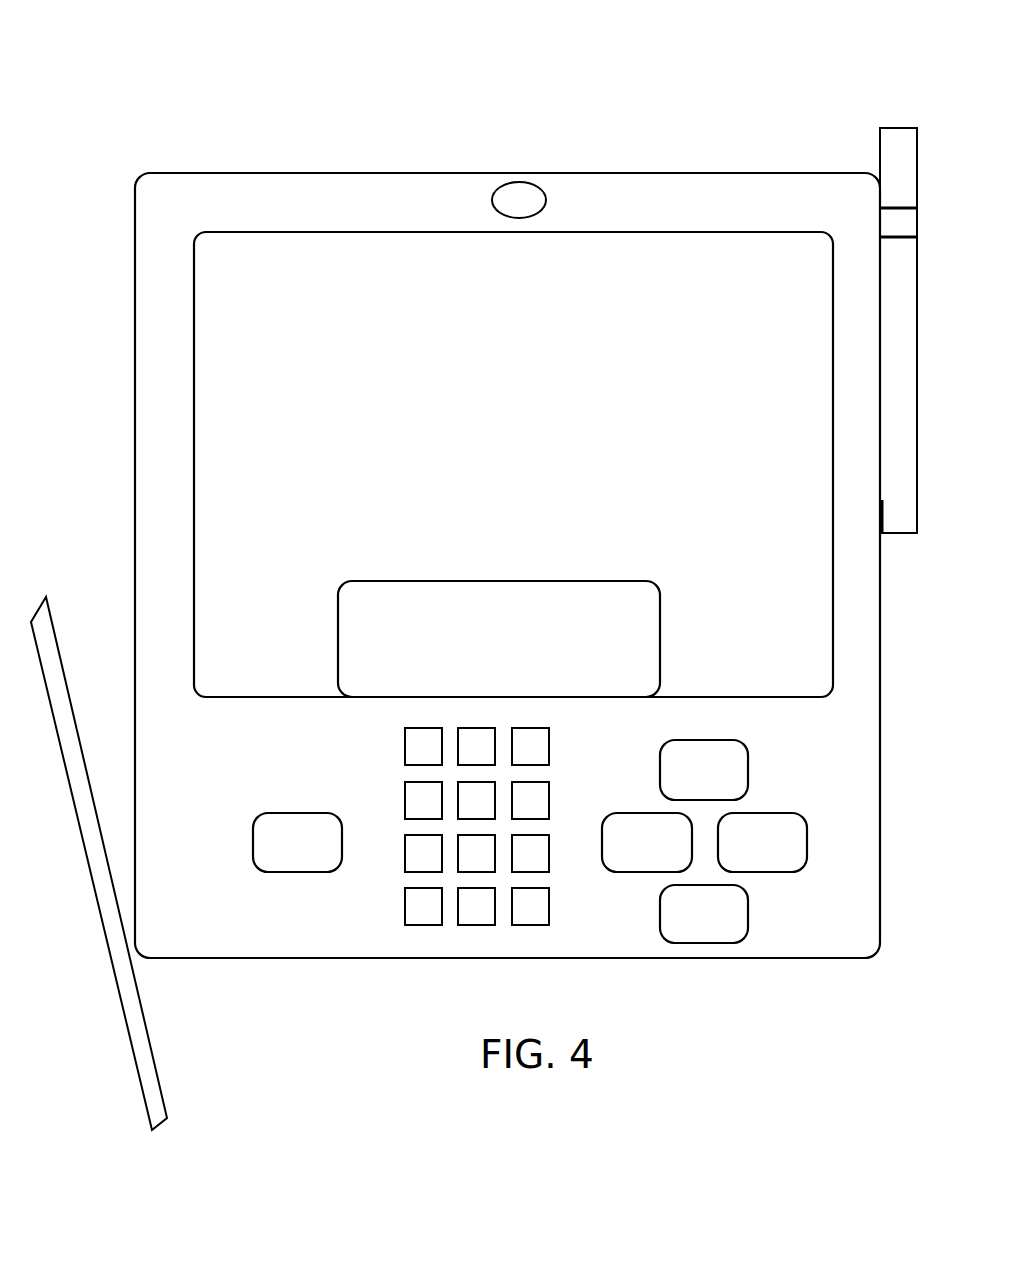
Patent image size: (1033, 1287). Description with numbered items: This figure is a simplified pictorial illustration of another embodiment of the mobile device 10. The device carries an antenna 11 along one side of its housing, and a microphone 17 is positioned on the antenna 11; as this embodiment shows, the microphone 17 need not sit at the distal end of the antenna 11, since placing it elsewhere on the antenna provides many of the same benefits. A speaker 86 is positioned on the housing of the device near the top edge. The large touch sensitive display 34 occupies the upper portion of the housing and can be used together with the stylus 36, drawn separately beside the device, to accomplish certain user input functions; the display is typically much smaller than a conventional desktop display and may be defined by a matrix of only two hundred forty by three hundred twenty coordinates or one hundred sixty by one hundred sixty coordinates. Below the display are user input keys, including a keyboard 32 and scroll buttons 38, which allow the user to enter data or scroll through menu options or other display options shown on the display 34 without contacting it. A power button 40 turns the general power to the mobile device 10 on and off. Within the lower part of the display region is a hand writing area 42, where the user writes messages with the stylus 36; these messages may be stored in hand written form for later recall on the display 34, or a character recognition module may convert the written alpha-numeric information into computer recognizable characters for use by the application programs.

The mobile device 10 is at (497, 549).
The antenna 11 is at (880, 163).
The microphone 17 is at (906, 218).
The keyboard 32 is at (385, 783).
The touch sensitive display 34 is at (325, 292).
The stylus 36 is at (141, 985).
The scroll buttons 38 is at (640, 918).
The power button 40 is at (297, 842).
The hand writing area 42 is at (370, 580).
The speaker 86 is at (518, 182).